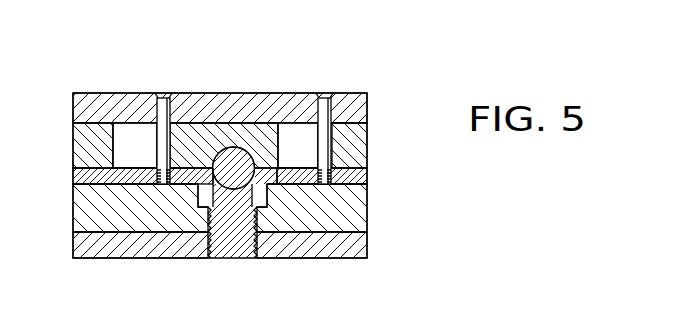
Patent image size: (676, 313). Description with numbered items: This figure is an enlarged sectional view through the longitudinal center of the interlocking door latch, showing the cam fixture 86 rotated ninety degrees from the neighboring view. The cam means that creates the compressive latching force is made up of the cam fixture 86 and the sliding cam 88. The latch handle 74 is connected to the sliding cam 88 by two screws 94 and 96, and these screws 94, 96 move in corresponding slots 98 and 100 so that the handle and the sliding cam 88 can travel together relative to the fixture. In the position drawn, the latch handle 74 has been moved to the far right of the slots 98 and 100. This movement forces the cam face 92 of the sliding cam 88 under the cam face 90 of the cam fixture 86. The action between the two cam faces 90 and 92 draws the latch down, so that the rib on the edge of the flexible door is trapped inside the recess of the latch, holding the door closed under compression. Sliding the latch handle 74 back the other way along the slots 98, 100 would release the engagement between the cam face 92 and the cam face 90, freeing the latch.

The latch handle 74 is at (83, 96).
The screw 94 is at (160, 97).
The cam face 92 is at (216, 172).
The cam fixture 86 is at (239, 152).
The screw 96 is at (327, 97).
The slot 98 is at (125, 148).
The slot 100 is at (300, 148).
The sliding cam 88 is at (82, 177).
The cam face 90 is at (214, 176).